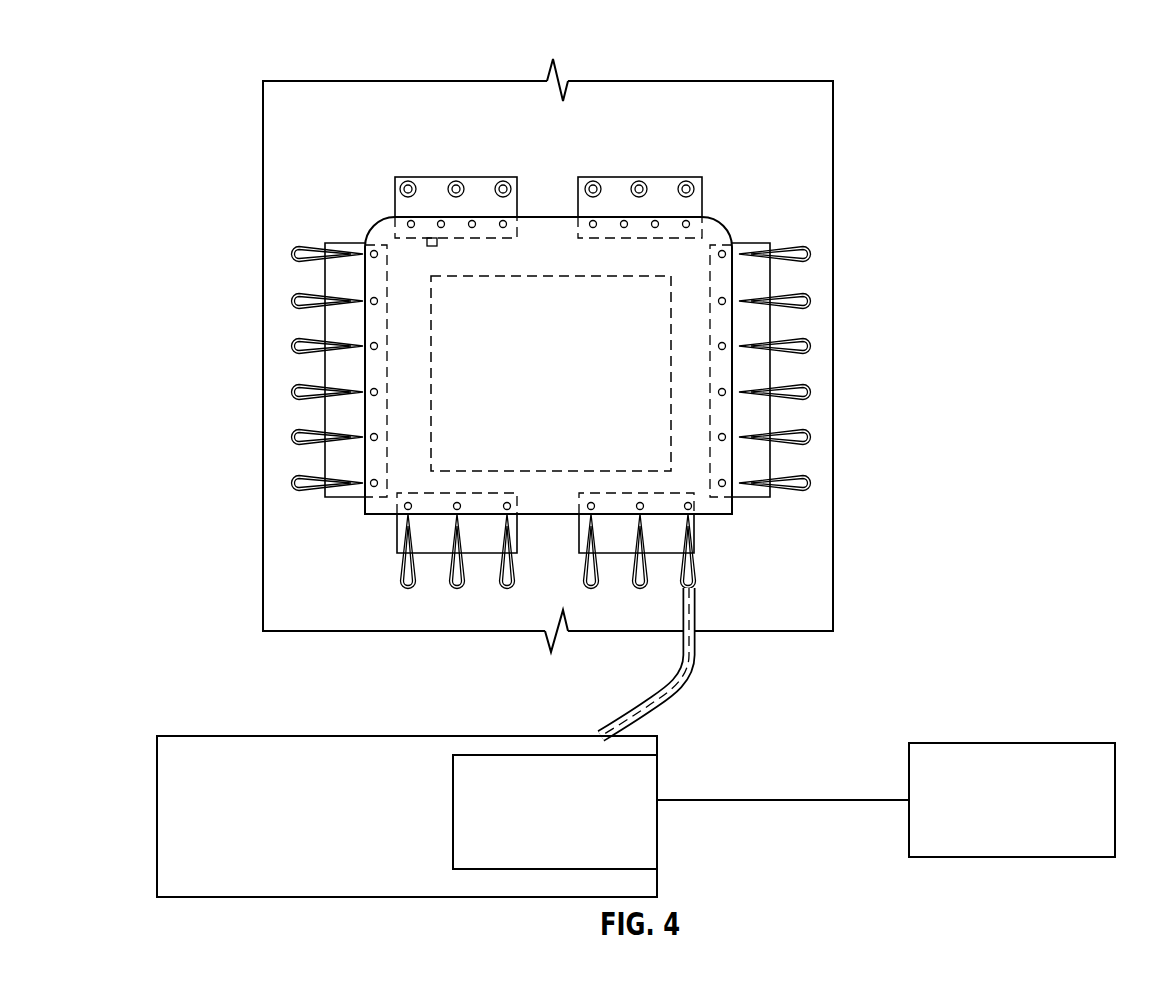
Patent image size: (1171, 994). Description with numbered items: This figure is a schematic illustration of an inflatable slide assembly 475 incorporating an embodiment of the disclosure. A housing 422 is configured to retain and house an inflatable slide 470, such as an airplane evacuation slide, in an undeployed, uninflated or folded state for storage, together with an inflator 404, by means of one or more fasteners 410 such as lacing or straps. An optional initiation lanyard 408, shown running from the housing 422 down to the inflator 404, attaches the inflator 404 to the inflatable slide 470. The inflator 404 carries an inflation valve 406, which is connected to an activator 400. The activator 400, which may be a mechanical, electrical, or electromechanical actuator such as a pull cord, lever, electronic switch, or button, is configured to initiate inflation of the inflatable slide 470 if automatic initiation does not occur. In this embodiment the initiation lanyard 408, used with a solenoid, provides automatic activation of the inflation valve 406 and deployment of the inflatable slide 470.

The inflatable slide assembly 475 is at (276, 54).
The housing 422 is at (720, 223).
The inflatable slide 470 is at (673, 377).
The fasteners 410 is at (804, 478).
The initiation lanyard 408 is at (689, 687).
The inflator 404 is at (195, 735).
The inflation valve 406 is at (453, 812).
The activator 400 is at (1012, 741).